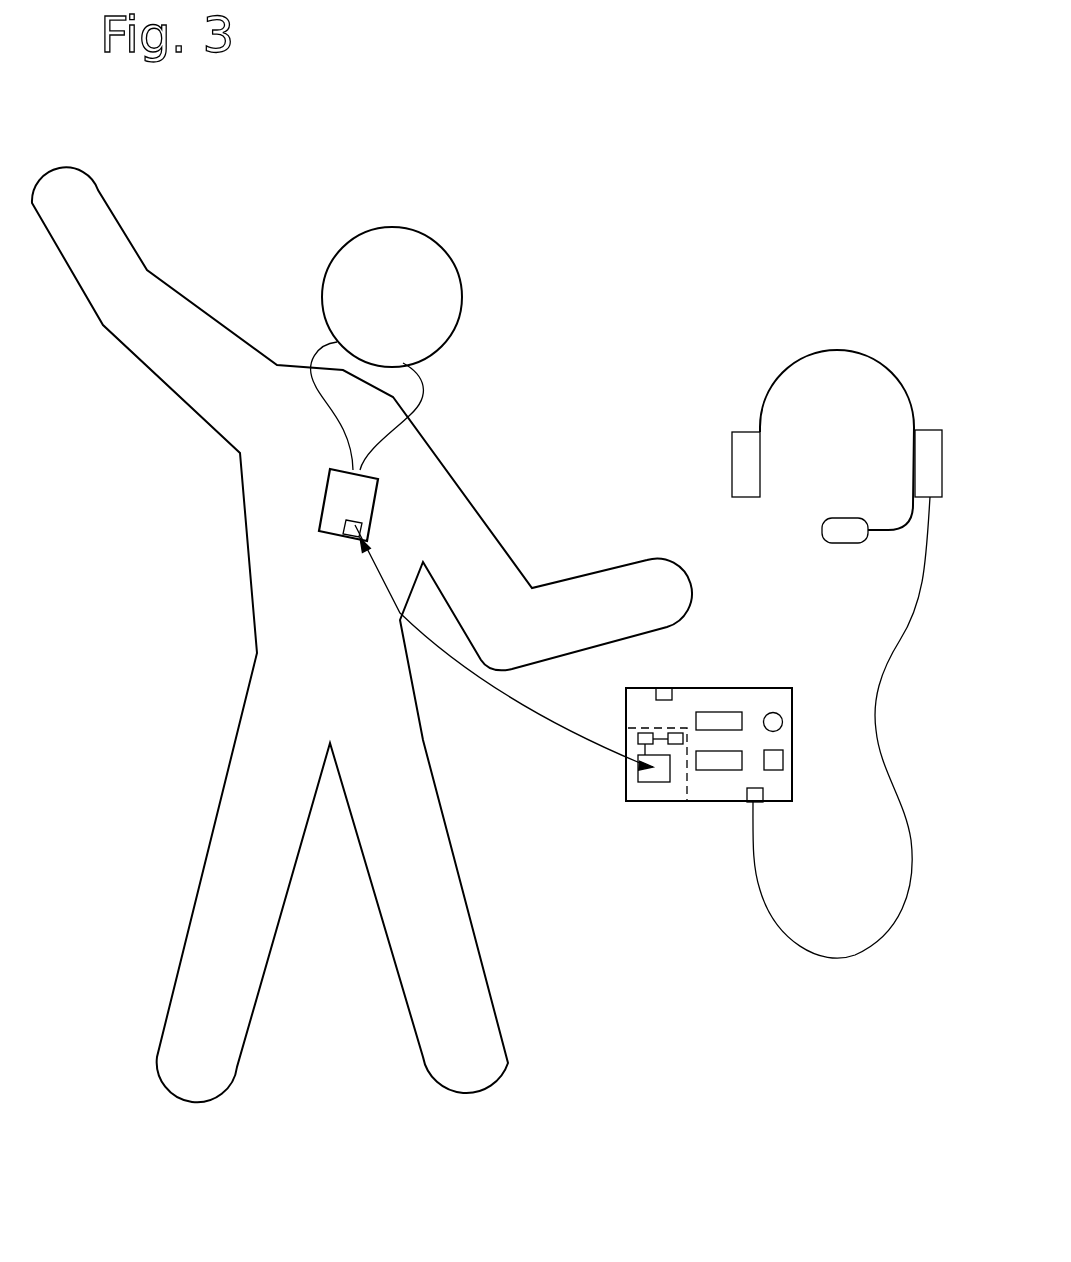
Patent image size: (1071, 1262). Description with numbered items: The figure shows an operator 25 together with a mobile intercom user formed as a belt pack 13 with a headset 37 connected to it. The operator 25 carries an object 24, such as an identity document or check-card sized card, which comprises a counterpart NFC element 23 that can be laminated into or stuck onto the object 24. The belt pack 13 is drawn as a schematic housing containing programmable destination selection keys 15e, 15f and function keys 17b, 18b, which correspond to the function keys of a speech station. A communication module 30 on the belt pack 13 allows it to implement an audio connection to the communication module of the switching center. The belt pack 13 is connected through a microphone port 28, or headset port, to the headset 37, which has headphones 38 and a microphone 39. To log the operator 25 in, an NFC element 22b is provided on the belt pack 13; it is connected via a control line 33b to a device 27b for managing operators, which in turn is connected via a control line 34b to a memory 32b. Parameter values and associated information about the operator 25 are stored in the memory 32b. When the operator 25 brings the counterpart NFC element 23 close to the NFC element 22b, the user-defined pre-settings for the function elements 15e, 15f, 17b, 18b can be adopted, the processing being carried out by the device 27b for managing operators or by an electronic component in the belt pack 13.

The belt pack 13 is at (675, 837).
The destination selection key 15e is at (722, 720).
The destination selection key 15f is at (718, 765).
The function key 17b is at (775, 715).
The function key 18b is at (780, 755).
The NFC element 22b is at (661, 773).
The counterpart NFC element 23 is at (348, 525).
The object 24 is at (358, 498).
The operator 25 is at (302, 598).
The device for managing operators 27b is at (640, 738).
The microphone port 28 is at (757, 800).
The communication module 30 is at (663, 694).
The memory 32b is at (676, 736).
The control line 33b is at (645, 749).
The control line 34b is at (660, 738).
The headset 37 is at (843, 340).
The headphones 38 is at (745, 463).
The microphone 39 is at (843, 530).